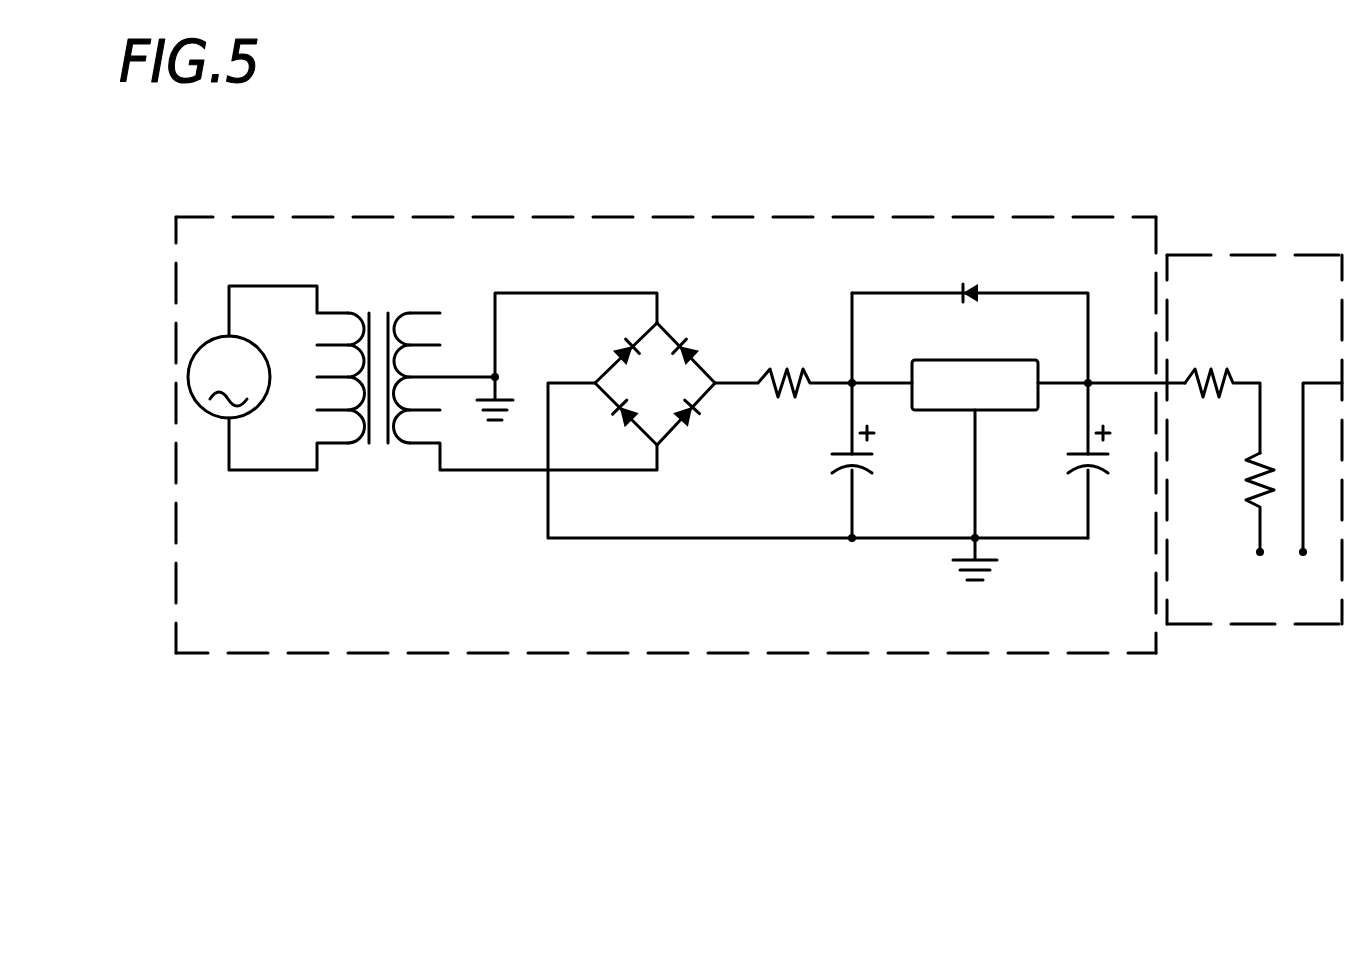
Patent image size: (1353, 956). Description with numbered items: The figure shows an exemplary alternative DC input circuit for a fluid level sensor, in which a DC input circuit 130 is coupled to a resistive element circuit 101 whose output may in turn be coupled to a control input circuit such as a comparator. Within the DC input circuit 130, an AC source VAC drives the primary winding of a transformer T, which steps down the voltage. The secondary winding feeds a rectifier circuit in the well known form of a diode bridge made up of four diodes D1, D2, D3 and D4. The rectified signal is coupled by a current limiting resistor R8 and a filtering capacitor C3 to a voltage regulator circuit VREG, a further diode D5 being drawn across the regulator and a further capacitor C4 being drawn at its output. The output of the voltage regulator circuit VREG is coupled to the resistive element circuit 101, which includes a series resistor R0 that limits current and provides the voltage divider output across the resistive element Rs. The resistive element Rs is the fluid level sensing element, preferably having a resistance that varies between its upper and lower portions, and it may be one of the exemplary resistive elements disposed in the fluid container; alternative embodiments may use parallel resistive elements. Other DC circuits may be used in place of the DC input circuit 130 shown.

The DC input circuit 130 is at (636, 668).
The resistive element circuit 101 is at (1253, 652).
The diode D1 is at (619, 340).
The diode D2 is at (691, 347).
The diode D3 is at (691, 424).
The diode D4 is at (623, 423).
The diode D5 is at (970, 386).
The current limiting resistor R8 is at (813, 353).
The filtering capacitor C3 is at (870, 415).
The capacitor C4 is at (1069, 465).
The series resistor R0 is at (1222, 382).
The resistive element Rs is at (1233, 502).
The transformer T is at (378, 353).
The AC voltage source VAC is at (229, 377).
The voltage regulator circuit VREG is at (975, 385).